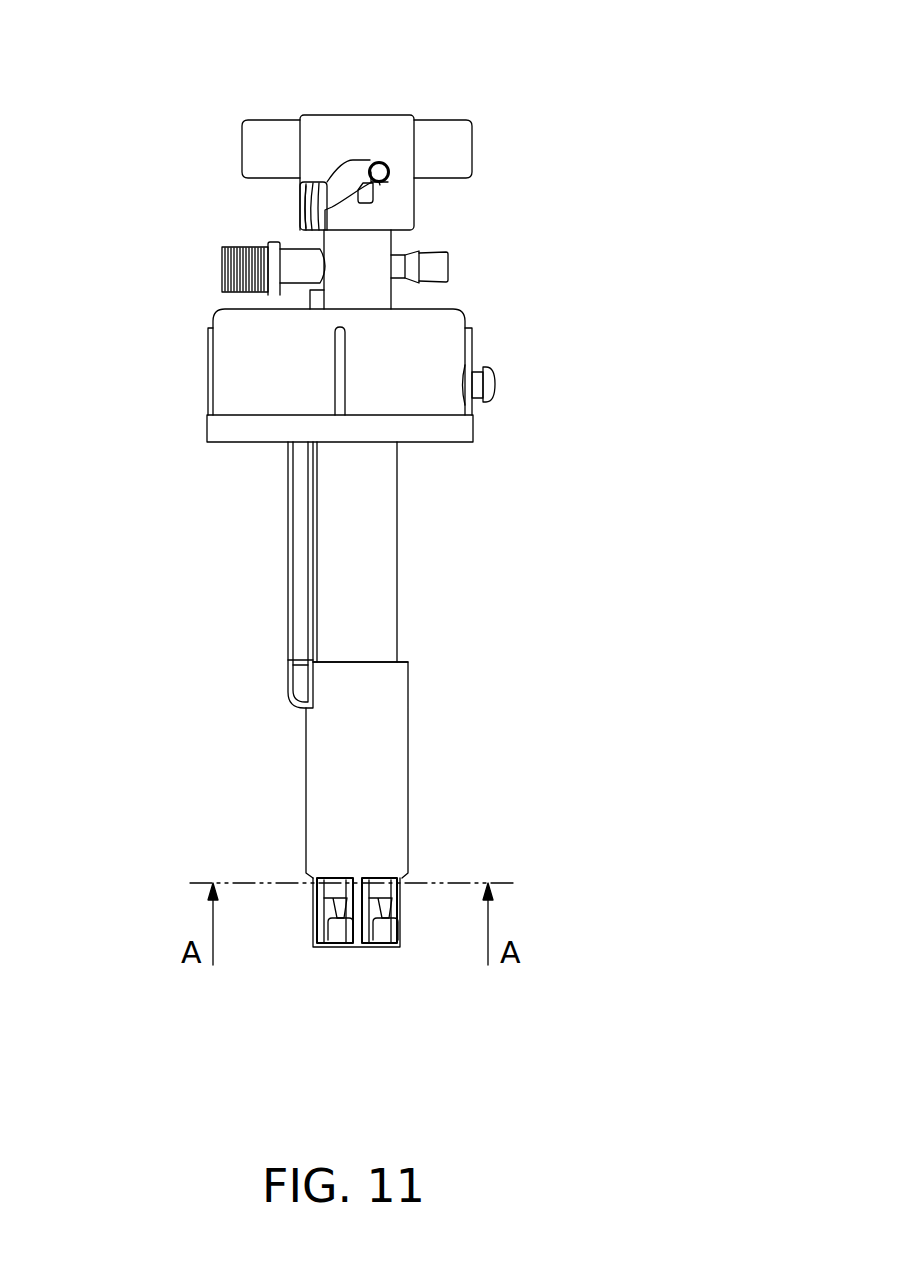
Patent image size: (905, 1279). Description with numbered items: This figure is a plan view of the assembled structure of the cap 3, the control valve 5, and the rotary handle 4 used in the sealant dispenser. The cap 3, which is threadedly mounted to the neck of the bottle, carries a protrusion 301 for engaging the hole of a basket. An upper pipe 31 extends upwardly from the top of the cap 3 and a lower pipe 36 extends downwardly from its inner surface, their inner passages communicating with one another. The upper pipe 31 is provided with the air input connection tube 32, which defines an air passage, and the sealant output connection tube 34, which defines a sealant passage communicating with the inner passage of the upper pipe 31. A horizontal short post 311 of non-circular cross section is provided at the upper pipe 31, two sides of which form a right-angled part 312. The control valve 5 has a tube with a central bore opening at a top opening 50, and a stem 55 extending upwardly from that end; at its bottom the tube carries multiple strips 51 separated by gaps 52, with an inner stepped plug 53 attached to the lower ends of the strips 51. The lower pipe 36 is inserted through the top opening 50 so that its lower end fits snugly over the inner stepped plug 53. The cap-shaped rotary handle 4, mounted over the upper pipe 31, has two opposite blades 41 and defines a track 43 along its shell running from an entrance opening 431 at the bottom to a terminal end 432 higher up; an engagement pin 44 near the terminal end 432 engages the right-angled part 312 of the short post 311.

The cap 3 is at (250, 358).
The rotary handle 4 is at (369, 128).
The control valve 5 is at (392, 770).
The upper pipe 31 is at (372, 290).
The air input connection tube 32 is at (242, 268).
The sealant output connection tube 34 is at (435, 270).
The lower pipe 36 is at (376, 545).
The blades 41 is at (262, 140).
The track 43 is at (332, 172).
The engagement pin 44 is at (357, 188).
The top opening 50 is at (400, 662).
The strips 51 is at (355, 945).
The gaps 52 is at (333, 910).
The inner stepped plug 53 is at (378, 928).
The stem 55 is at (302, 560).
The protrusion 301 is at (495, 382).
The short post 311 is at (382, 165).
The right-angled part 312 is at (389, 183).
The entrance opening 431 is at (317, 213).
The terminal end 432 is at (391, 165).